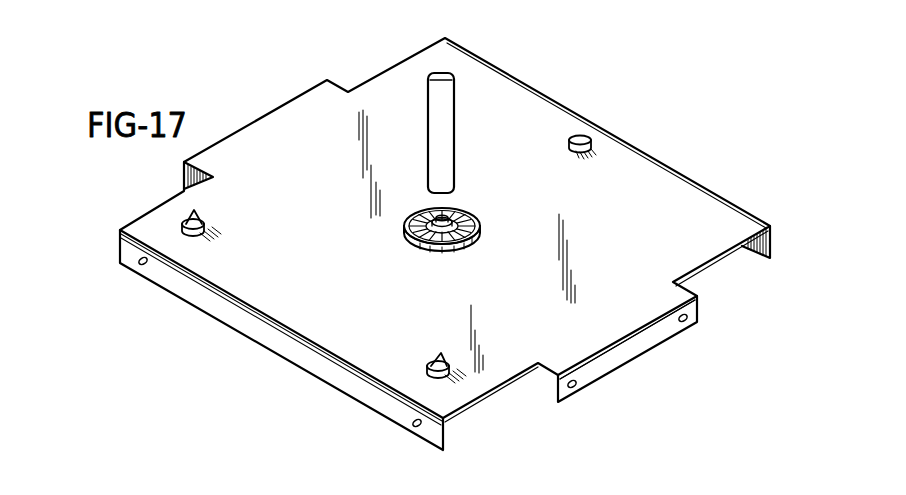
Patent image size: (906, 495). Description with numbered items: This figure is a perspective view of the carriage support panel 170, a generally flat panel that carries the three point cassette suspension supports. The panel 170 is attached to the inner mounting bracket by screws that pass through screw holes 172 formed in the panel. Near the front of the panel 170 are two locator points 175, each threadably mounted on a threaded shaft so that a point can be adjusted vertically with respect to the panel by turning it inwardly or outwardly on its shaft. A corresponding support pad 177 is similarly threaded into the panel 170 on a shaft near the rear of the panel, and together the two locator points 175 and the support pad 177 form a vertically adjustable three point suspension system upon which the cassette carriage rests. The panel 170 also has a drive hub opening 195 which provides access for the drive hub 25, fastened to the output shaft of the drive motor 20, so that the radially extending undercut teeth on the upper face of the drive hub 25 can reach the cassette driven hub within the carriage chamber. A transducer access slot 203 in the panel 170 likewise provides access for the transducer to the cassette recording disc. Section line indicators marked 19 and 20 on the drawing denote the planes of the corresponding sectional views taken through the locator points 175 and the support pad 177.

The carriage support panel 170 is at (665, 186).
The screw holes 172 is at (144, 266).
The locator points 175 is at (190, 222).
The support pad 177 is at (575, 136).
The drive hub opening 195 is at (478, 228).
The transducer access slot 203 is at (430, 87).
The drive hub 25 is at (404, 224).
The section line 19- 19 is at (212, 213).
The drive motor 20 is at (597, 140).